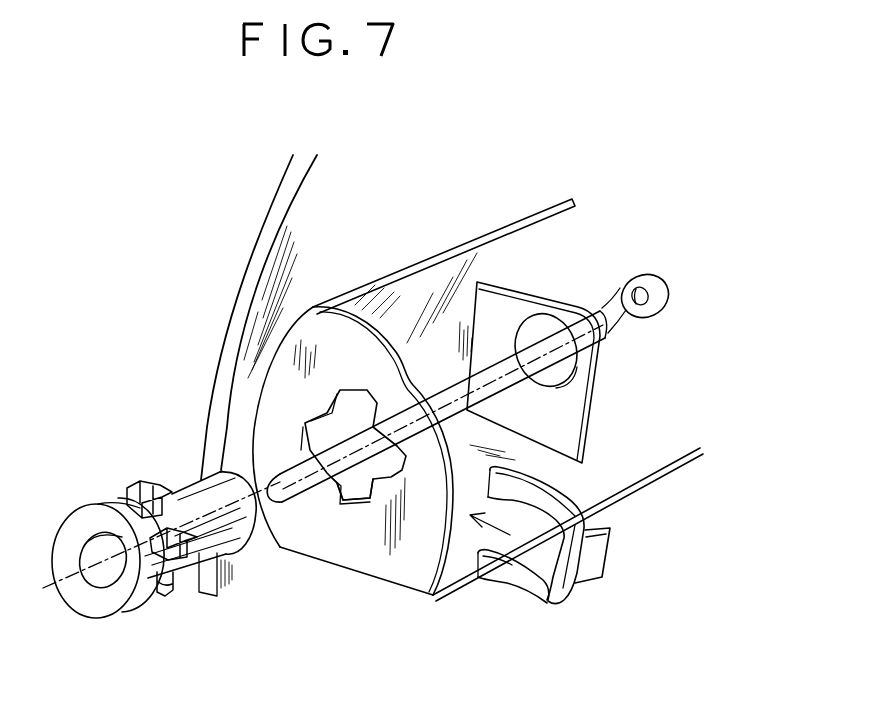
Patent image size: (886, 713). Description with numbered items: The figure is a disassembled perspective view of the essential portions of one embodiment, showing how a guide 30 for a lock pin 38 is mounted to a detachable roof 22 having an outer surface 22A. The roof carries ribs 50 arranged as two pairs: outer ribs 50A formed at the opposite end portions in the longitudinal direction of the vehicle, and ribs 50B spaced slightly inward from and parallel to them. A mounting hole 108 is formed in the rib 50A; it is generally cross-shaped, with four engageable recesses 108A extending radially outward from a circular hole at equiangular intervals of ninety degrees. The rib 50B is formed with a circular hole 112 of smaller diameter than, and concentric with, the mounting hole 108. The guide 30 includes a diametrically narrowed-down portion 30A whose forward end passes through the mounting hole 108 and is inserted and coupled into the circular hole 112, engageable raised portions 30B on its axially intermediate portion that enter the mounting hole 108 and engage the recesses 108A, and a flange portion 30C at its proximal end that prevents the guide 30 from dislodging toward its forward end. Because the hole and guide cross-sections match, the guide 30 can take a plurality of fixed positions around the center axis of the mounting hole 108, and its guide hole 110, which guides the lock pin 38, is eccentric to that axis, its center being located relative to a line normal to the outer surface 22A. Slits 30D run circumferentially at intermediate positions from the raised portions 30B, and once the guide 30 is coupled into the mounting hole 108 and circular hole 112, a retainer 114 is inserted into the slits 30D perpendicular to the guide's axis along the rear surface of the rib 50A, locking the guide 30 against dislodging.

The detachable roof 22 is at (250, 229).
The outer surface of the detachable roof 22A is at (233, 283).
The guide 30 is at (175, 536).
The diametrically narrowed-down portion 30A is at (233, 533).
The engageable raised portions 30B is at (170, 587).
The flange portion 30C is at (110, 605).
The slits 30D is at (161, 597).
The lock pin 38 is at (657, 275).
The ribs 50 is at (434, 257).
The outer ribs 50A is at (398, 590).
The inner ribs 50B is at (587, 444).
The mounting hole 108 is at (327, 407).
The engageable recesses 108A is at (343, 500).
The guide hole 110 is at (93, 580).
The circular hole 112 is at (575, 373).
The retainer 114 is at (600, 560).